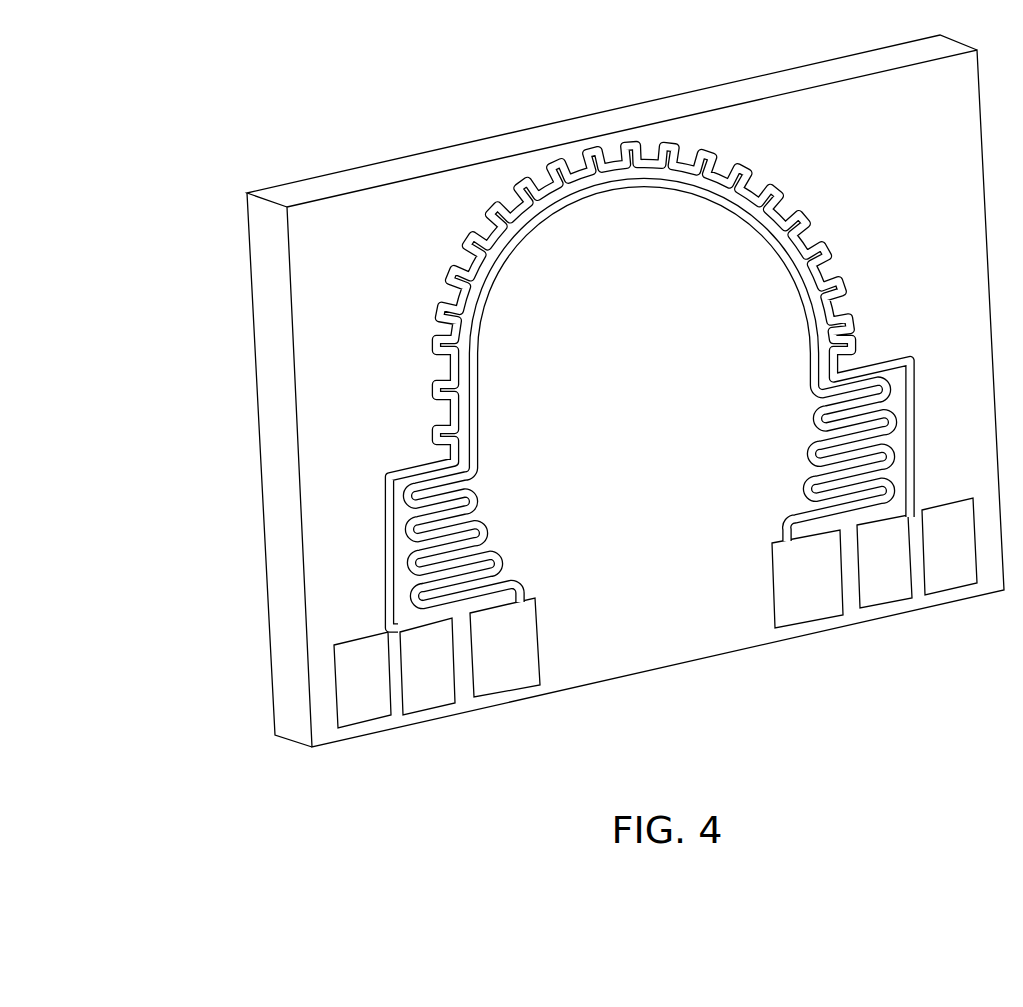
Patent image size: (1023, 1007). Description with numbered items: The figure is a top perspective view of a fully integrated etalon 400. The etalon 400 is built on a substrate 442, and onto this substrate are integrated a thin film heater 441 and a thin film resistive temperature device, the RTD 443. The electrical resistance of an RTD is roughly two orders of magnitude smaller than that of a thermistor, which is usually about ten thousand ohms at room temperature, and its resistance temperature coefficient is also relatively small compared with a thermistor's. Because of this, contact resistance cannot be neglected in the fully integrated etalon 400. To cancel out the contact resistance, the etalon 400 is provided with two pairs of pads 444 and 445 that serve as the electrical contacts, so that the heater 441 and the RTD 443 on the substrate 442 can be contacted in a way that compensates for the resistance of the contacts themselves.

The etalon 400 is at (566, 411).
The thin film heater 441 is at (470, 283).
The substrate 442 is at (512, 153).
The thin film resistive temperature device (RTD) 443 is at (640, 192).
The pads 444 is at (365, 722).
The pads 445 is at (955, 595).